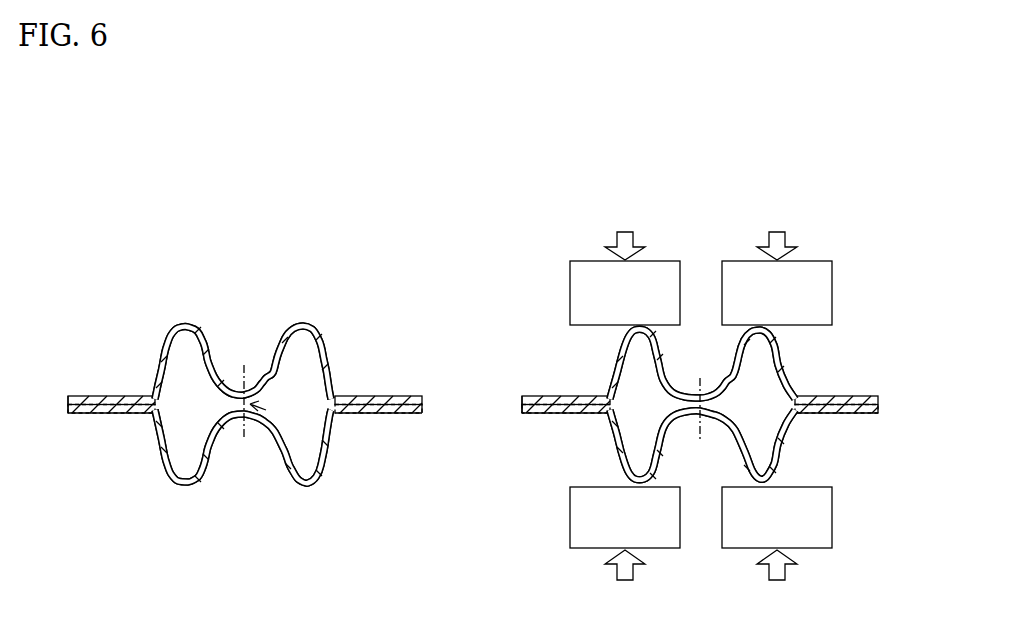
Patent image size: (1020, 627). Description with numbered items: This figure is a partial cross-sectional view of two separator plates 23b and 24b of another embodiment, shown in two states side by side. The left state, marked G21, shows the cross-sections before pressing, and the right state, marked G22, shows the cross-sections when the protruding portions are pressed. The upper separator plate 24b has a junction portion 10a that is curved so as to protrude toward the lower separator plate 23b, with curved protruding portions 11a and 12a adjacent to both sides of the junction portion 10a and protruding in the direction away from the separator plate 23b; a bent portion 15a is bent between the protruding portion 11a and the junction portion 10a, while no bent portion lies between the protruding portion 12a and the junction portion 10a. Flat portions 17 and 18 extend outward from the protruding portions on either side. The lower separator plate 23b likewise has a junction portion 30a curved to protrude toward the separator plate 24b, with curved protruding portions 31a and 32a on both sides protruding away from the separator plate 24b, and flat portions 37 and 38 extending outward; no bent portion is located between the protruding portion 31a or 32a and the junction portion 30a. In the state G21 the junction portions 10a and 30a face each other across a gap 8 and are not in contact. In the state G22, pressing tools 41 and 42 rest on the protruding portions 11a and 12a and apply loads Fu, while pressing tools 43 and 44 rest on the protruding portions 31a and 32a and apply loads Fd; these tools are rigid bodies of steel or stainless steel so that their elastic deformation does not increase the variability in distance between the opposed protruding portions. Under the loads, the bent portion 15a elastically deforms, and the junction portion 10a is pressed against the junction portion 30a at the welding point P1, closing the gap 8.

The cross-sections before pressing G21 is at (401, 171).
The cross-sections when pressed G22 is at (870, 171).
The gap 8 is at (266, 410).
The junction portion 10a is at (250, 388).
The protruding portion 11a is at (303, 325).
The protruding portion 12a is at (184, 325).
The bent portion 15a is at (268, 370).
The flat portion 17 is at (118, 396).
The flat portion 18 is at (375, 396).
The separator plate 23b is at (64, 417).
The separator plate 24b is at (64, 392).
The junction portion 30a is at (262, 422).
The protruding portion 31a is at (300, 486).
The protruding portion 32a is at (185, 486).
The flat portion 37 is at (118, 414).
The flat portion 38 is at (375, 414).
The pressing tool 41 is at (808, 261).
The pressing tool 42 is at (660, 261).
The pressing tool 43 is at (812, 549).
The pressing tool 44 is at (660, 549).
The welding point P1 is at (469, 418).
The load Fu is at (701, 229).
The load Fd is at (701, 581).